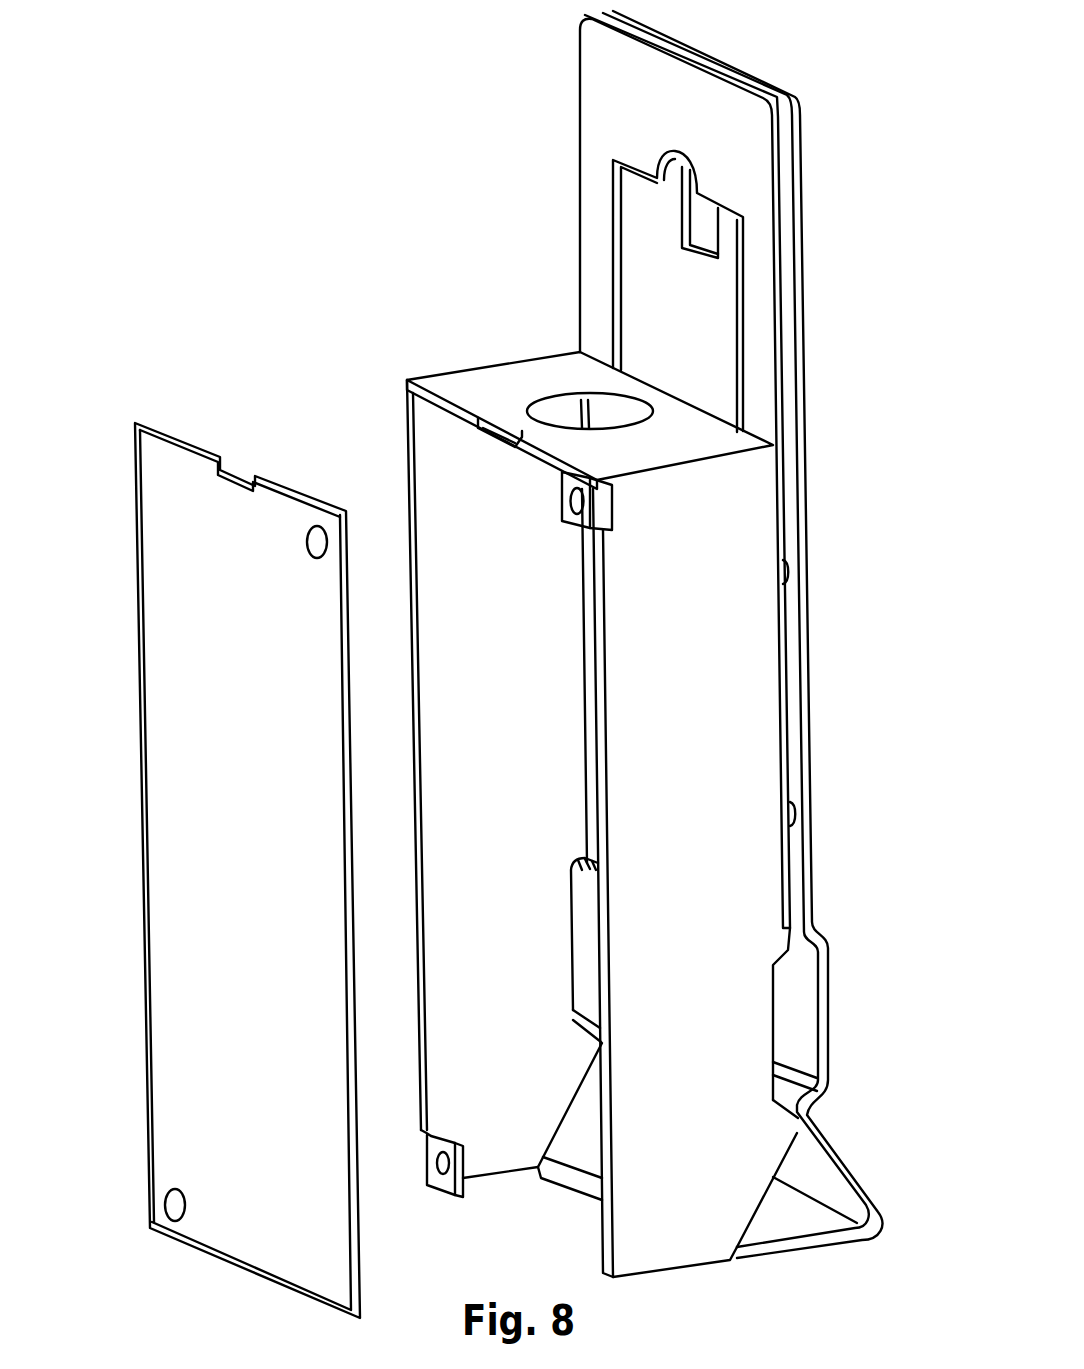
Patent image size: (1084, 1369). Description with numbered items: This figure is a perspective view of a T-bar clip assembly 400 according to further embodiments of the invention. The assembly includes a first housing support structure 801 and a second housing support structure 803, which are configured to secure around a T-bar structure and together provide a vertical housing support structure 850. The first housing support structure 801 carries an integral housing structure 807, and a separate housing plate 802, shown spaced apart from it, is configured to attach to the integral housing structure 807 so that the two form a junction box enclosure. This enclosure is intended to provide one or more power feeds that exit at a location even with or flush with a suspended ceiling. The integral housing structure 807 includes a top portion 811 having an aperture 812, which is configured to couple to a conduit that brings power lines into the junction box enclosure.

The power supply assembly 400 is at (243, 150).
The first housing support structure 801 is at (605, 95).
The housing plate 802 is at (175, 848).
The second housing support structure 803 is at (798, 175).
The integral housing structure 807 is at (658, 1197).
The top portion 811 is at (498, 382).
The aperture 812 is at (563, 398).
The vertical housing support structure 850 is at (830, 443).